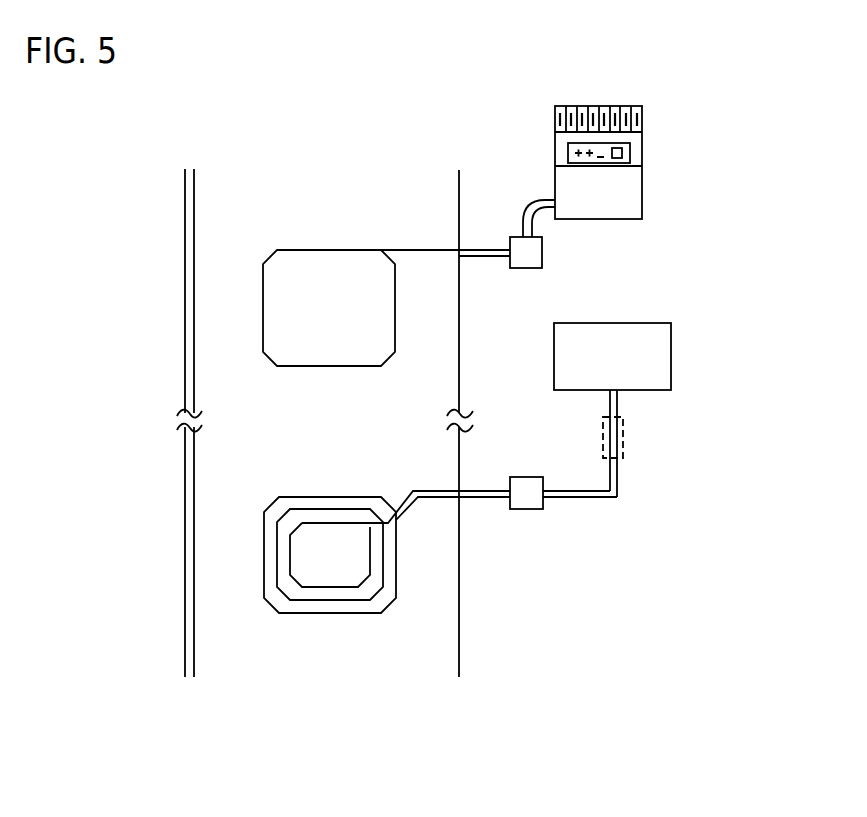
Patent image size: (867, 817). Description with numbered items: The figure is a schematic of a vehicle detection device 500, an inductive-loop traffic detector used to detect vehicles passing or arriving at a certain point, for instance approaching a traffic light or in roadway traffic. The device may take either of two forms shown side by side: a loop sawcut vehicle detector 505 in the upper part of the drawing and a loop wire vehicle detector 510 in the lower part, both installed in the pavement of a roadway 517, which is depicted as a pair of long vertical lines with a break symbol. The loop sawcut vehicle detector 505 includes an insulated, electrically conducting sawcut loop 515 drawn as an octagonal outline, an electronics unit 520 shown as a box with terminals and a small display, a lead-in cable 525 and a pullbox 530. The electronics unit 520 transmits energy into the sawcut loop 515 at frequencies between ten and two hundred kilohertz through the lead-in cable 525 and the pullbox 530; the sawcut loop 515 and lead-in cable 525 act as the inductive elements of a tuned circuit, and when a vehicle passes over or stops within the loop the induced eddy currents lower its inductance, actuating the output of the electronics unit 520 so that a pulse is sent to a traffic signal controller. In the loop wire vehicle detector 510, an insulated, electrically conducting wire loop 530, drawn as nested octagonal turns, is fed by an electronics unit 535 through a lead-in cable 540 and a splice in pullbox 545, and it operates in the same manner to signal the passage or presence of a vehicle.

The vehicle detection device 500 is at (703, 77).
The loop sawcut vehicle detector 505 is at (313, 178).
The loop wire vehicle detector 510 is at (315, 672).
The sawcut loop 515 is at (329, 250).
The roadway 517 is at (252, 422).
The electronics unit 520 is at (645, 179).
The lead-in cable 525 is at (530, 197).
The pullbox / wire loop 530 is at (545, 252).
The electronics unit 535 is at (675, 354).
The lead-in cable 540 is at (618, 474).
The splice in pullbox 545 is at (526, 509).